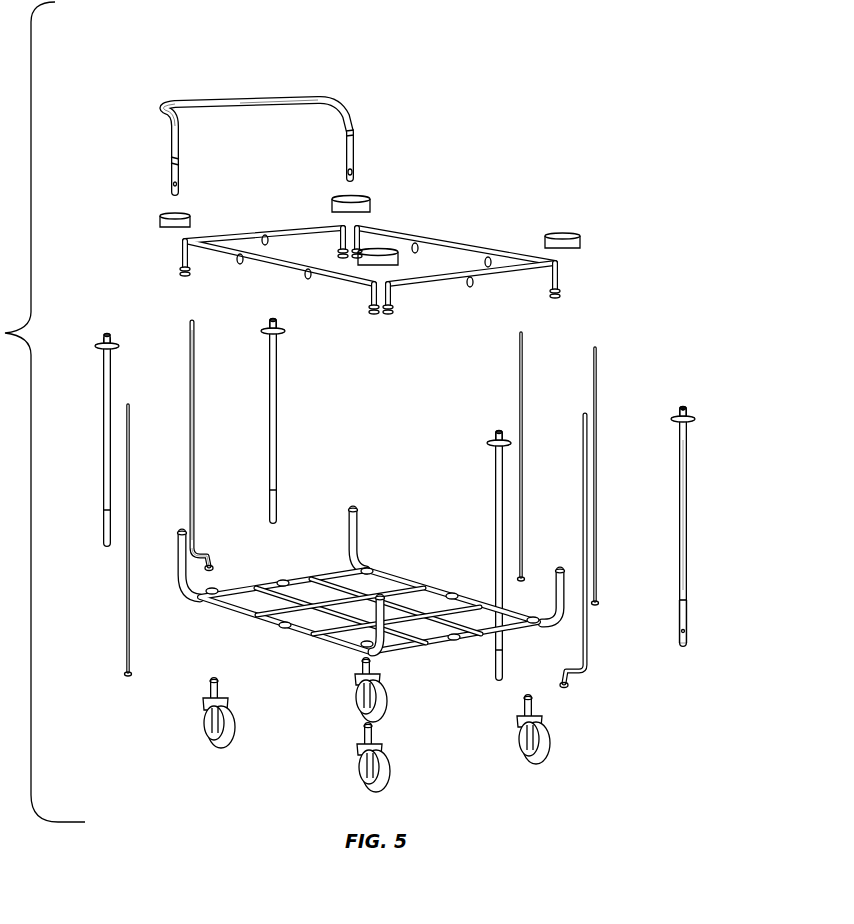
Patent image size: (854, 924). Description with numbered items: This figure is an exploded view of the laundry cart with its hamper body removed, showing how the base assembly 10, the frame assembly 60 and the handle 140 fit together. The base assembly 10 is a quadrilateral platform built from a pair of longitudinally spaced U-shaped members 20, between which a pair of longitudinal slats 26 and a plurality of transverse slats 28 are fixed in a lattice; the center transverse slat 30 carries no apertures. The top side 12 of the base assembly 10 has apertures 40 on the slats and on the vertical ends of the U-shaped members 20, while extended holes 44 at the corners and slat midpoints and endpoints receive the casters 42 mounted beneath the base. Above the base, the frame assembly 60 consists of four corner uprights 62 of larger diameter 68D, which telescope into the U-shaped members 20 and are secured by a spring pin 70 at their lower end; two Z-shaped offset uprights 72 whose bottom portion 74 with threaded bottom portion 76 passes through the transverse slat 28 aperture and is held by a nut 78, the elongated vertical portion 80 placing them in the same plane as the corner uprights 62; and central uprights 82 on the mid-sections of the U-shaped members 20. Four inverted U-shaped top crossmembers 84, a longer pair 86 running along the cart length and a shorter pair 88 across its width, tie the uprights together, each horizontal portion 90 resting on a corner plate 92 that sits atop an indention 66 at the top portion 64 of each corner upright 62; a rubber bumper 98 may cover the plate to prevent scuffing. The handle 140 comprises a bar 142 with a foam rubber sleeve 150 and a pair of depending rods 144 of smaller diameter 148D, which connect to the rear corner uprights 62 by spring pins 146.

The base assembly 10 is at (354, 616).
The top side of the base 12 is at (376, 569).
The U-shaped members 20 is at (395, 584).
The longitudinal slats 26 is at (270, 603).
The transverse slats 28 is at (447, 635).
The center transverse slat 30 is at (295, 625).
The apertures 40 is at (180, 541).
The casters 42 is at (207, 715).
The extended holes 44 is at (447, 590).
The frame assembly 60 is at (417, 247).
The corner uprights 62 is at (404, 498).
The top portion of the corner uprights 64 is at (690, 436).
The indention 66 is at (691, 421).
The diameter of the corner uprights 68D is at (688, 407).
The spring pin 70 is at (688, 630).
The offset uprights 72 is at (417, 505).
The bottom portion of the offset uprights 74 is at (205, 552).
The threaded bottom portion 76 is at (214, 561).
The nut 78 is at (218, 568).
The elongated vertical portion 80 is at (196, 455).
The central uprights 82 is at (524, 372).
The inverted U-shaped top crossmembers 84 is at (462, 242).
The longer pair of top crossmembers 86 is at (432, 238).
The shorter pair of top crossmembers 88 is at (500, 274).
The horizontal portion of the top crossmembers 90 is at (502, 252).
The corner plates 92 is at (690, 418).
The rubber bumper 98 is at (575, 233).
The handle 140 is at (261, 117).
The bar 142 is at (265, 100).
The depending rods 144 is at (171, 158).
The spring pins 146 is at (355, 171).
The diameter of the depending rods 148D is at (171, 189).
The foam rubber sleeve 150 is at (205, 97).